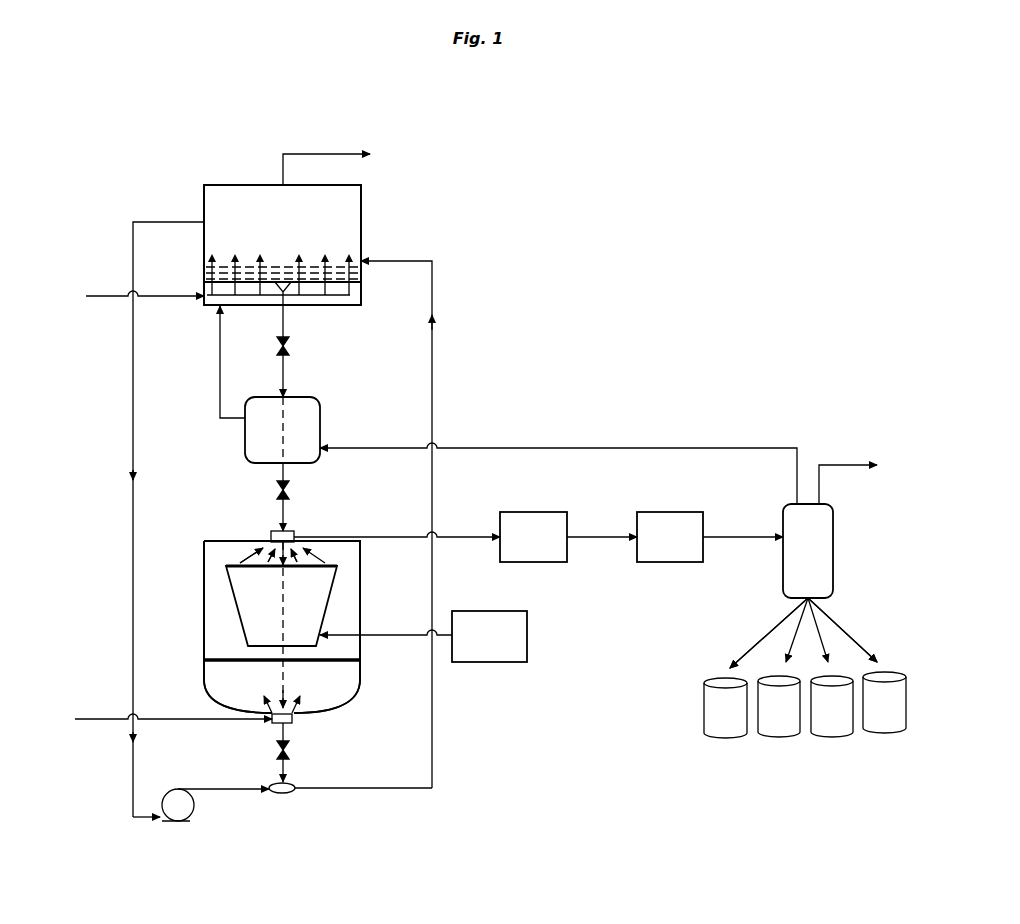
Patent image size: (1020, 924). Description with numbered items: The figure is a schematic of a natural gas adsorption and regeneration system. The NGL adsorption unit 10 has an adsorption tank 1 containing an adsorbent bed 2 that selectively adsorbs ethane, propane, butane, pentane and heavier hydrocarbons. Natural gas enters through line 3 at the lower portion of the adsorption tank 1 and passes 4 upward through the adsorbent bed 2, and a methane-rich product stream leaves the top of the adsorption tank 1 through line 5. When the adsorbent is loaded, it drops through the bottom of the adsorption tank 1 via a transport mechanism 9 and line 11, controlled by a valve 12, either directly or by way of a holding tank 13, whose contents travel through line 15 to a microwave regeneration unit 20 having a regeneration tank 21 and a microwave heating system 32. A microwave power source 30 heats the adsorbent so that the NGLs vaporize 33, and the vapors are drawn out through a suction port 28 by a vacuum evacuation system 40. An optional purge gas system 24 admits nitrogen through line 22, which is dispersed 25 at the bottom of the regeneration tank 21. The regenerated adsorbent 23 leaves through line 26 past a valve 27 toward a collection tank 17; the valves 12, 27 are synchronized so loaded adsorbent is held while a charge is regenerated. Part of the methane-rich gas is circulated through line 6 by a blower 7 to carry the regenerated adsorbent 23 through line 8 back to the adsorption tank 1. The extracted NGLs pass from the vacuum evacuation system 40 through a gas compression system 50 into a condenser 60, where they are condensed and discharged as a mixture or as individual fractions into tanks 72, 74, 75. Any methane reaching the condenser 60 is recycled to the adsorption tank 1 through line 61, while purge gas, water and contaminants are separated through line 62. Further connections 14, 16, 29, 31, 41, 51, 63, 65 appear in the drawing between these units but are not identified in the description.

The adsorption tank 1 is at (204, 190).
The adsorbent bed 2 is at (290, 262).
The natural gas inlet line 3 is at (105, 296).
The passage of natural gas through adsorbent bed 4 is at (224, 265).
The product gas outlet line 5 is at (318, 154).
The circulation line 6 is at (133, 455).
The blower 7 is at (190, 818).
The adsorbent transport line 8 is at (440, 380).
The transport mechanism 9 is at (290, 296).
The NGL adsorption unit 10 is at (233, 170).
The adsorbent transfer line 11 is at (290, 335).
The valve 12 is at (290, 352).
The holding tank 13 is at (322, 423).
The overflow line 14 is at (218, 380).
The holding tank outlet line 15 is at (290, 478).
The feed pipe 16 is at (290, 493).
The collection tank 17 is at (290, 795).
The microwave regeneration unit 20 is at (215, 527).
The regeneration tank 21 is at (204, 636).
The purge gas line 22 is at (100, 719).
The regenerated adsorbent 23 is at (292, 680).
The purge gas system 24 is at (272, 720).
The purge gas dispersion 25 is at (275, 698).
The regenerated adsorbent outlet line 26 is at (290, 737).
The valve 27 is at (290, 755).
The suction port 28 is at (270, 533).
The gas line 29 is at (375, 537).
The microwave power source 30 is at (490, 662).
The control line 31 is at (370, 640).
The microwave heating system 32 is at (335, 600).
The NGL vaporization 33 is at (270, 555).
The vacuum evacuation system 40 is at (533, 562).
The connecting line 41 is at (598, 537).
The gas compression system 50 is at (668, 562).
The connecting line 51 is at (730, 537).
The condenser 60 is at (835, 562).
The methane recycle line 61 is at (605, 448).
The separation line 62 is at (843, 465).
The distribution line 63 is at (793, 618).
The distribution line 65 is at (860, 645).
The tank 72 is at (722, 740).
The tank 74 is at (830, 740).
The tank 75 is at (884, 738).